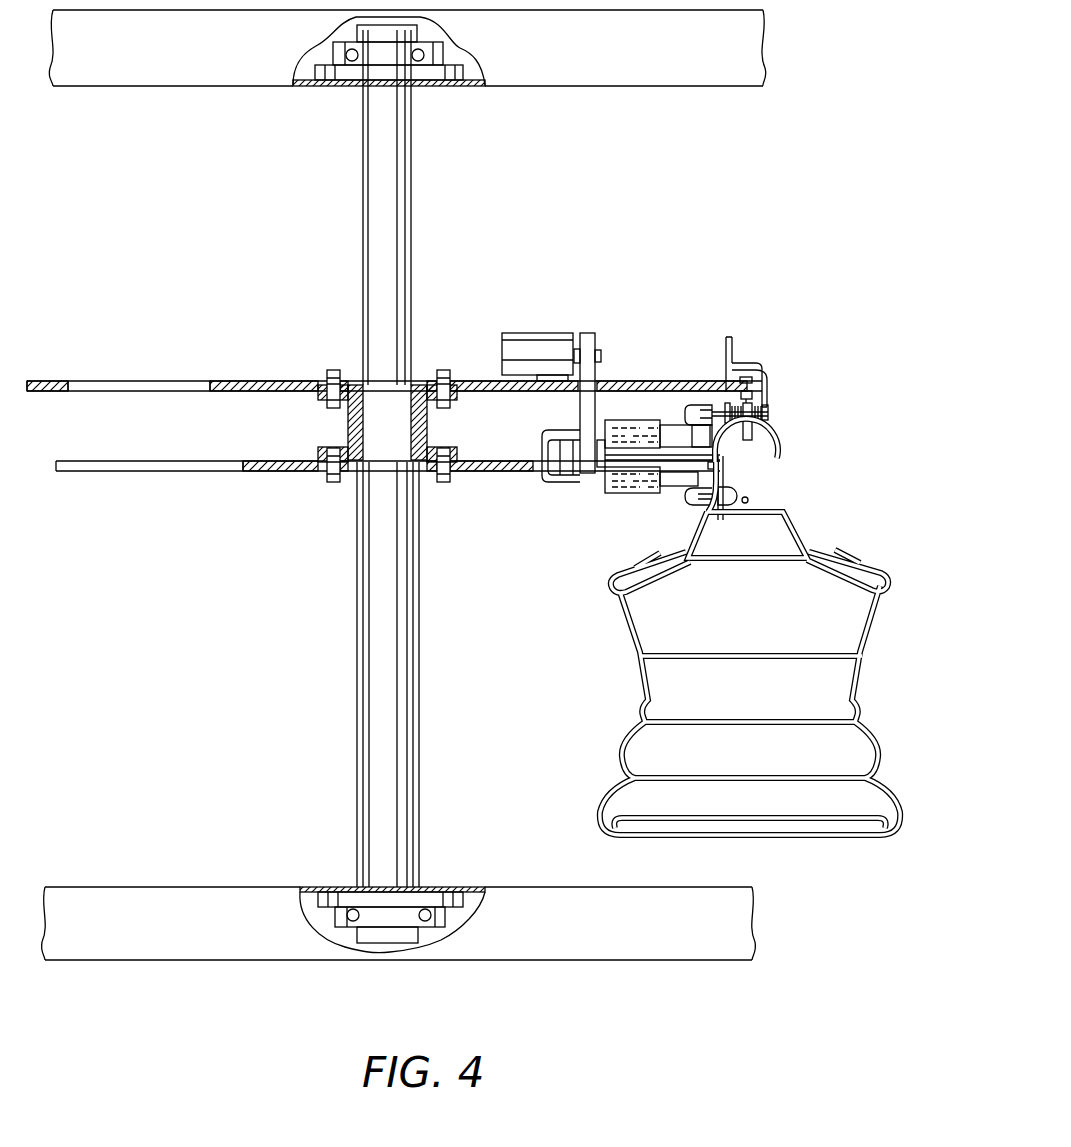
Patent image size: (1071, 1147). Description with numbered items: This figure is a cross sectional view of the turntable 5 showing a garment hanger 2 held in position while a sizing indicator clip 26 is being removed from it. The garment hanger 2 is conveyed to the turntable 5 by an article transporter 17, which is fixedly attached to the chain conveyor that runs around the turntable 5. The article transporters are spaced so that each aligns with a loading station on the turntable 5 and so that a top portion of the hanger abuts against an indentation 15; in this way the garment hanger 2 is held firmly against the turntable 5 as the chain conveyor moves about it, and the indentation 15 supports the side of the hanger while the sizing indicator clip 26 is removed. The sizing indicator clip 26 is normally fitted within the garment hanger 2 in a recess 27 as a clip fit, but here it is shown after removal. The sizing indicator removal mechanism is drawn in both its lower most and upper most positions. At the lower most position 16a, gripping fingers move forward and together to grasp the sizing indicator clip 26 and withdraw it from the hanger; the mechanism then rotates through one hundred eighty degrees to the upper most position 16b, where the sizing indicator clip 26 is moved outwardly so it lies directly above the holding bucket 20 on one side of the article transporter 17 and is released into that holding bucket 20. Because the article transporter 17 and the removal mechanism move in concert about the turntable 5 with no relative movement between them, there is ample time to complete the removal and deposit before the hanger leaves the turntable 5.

The garment hanger 2 is at (612, 580).
The turntable 5 is at (258, 366).
The indentation 15 is at (722, 456).
The lower most position of sizing indicator removal mechanism 16a is at (610, 495).
The upper most position of sizing indicator removal mechanism 16b is at (628, 417).
The article transporter 17 is at (766, 412).
The holding bucket 20 is at (665, 420).
The sizing indicator clip 26 is at (692, 405).
The recess 27 is at (742, 500).